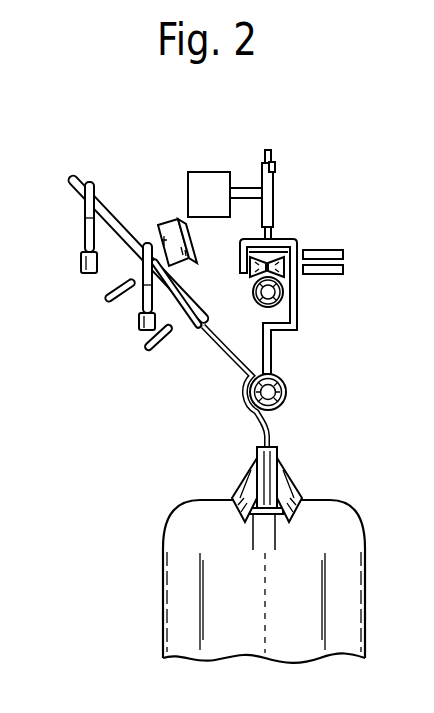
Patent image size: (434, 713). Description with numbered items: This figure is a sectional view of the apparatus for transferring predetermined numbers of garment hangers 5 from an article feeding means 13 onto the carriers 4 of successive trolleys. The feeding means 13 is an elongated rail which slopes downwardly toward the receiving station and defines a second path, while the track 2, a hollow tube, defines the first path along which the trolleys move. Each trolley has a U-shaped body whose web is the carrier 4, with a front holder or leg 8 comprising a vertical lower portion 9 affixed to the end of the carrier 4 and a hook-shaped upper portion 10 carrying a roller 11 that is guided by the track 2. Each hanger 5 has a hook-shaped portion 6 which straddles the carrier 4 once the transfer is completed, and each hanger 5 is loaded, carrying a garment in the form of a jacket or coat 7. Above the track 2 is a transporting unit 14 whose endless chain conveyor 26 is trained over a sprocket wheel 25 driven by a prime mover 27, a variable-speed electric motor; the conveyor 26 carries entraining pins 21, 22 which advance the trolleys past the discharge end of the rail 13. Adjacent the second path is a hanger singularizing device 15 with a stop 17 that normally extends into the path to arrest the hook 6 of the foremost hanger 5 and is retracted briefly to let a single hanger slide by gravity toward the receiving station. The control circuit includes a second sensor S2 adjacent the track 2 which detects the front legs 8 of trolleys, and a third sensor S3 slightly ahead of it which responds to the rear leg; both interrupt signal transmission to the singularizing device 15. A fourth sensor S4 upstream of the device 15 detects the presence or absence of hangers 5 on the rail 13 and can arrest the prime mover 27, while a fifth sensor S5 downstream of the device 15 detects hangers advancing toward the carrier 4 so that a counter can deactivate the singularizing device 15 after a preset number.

The track 2 is at (258, 306).
The carrier 4 is at (286, 401).
The garment hanger 5 is at (79, 261).
The hook-shaped portion 6 is at (86, 197).
The jacket or coat 7 is at (347, 562).
The front holder or leg 8 is at (298, 308).
The vertical lower portion 9 is at (273, 346).
The hook-shaped upper portion 10 is at (284, 239).
The roller 11 is at (274, 260).
The article feeding means 13 is at (108, 204).
The transporting unit 14 is at (258, 152).
The hanger singularizing device 15 is at (180, 224).
The stop 17 is at (166, 266).
The pin or stud 21 is at (263, 234).
The pin or stud 22 is at (271, 152).
The sprocket wheel 25 is at (274, 190).
The endless belt or chain conveyor 26 is at (276, 169).
The prime mover 27 is at (203, 171).
The second sensor S2 is at (340, 276).
The third sensor S3 is at (343, 249).
The fourth sensor S4 is at (106, 298).
The fifth sensor S5 is at (146, 351).